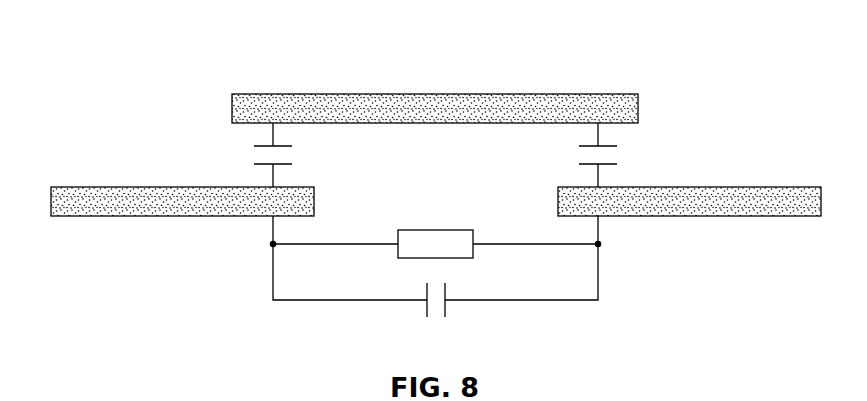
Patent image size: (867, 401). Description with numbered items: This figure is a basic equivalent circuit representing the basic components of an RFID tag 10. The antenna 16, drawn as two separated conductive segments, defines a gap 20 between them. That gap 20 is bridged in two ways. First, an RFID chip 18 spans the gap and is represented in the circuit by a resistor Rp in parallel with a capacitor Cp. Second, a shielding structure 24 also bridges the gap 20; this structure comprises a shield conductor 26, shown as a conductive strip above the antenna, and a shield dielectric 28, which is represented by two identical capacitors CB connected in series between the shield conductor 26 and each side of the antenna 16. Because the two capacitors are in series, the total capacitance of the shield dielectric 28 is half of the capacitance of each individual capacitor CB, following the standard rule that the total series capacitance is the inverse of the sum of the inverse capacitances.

The RFID tag 10 is at (105, 73).
The antenna 16 is at (158, 216).
The RFID chip 18 is at (612, 216).
The gap 20 is at (448, 163).
The shielding structure 24 is at (685, 95).
The shield conductor 26 is at (573, 108).
The shield dielectric 28 is at (247, 153).